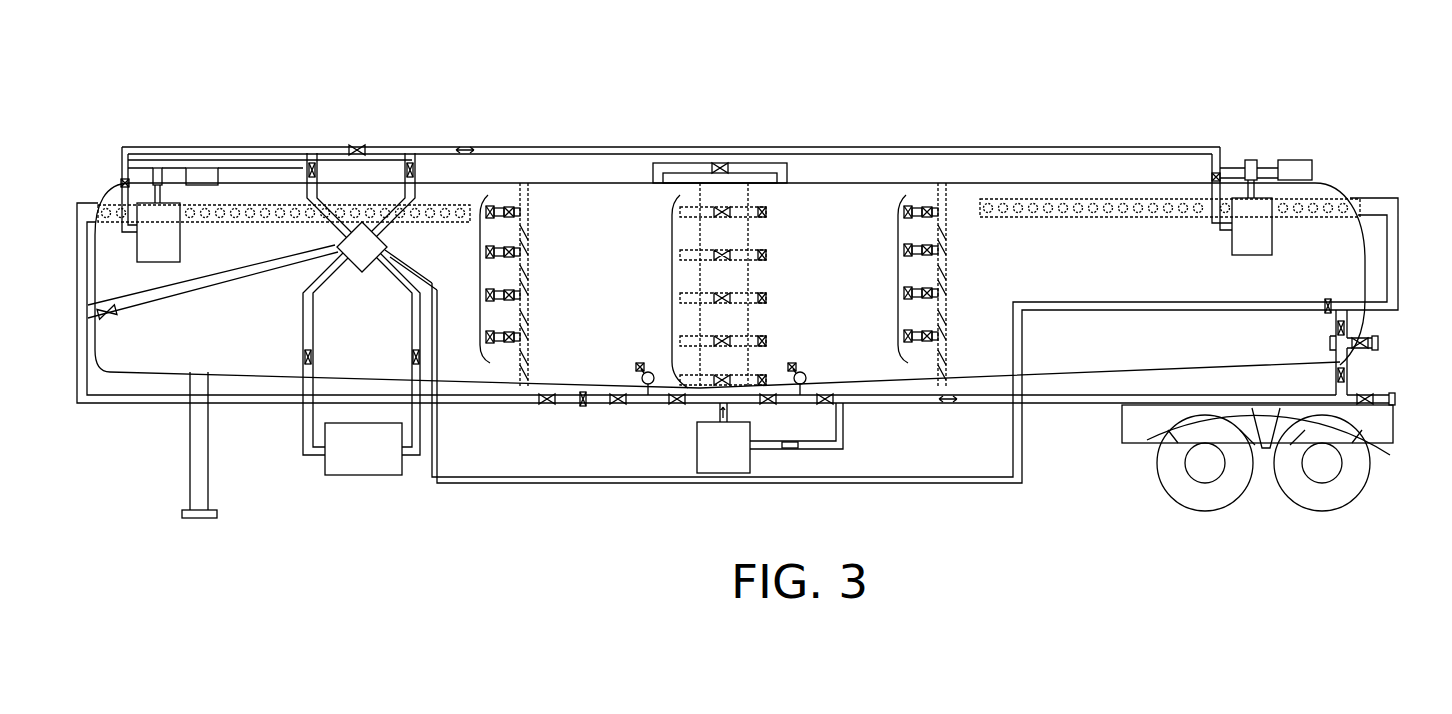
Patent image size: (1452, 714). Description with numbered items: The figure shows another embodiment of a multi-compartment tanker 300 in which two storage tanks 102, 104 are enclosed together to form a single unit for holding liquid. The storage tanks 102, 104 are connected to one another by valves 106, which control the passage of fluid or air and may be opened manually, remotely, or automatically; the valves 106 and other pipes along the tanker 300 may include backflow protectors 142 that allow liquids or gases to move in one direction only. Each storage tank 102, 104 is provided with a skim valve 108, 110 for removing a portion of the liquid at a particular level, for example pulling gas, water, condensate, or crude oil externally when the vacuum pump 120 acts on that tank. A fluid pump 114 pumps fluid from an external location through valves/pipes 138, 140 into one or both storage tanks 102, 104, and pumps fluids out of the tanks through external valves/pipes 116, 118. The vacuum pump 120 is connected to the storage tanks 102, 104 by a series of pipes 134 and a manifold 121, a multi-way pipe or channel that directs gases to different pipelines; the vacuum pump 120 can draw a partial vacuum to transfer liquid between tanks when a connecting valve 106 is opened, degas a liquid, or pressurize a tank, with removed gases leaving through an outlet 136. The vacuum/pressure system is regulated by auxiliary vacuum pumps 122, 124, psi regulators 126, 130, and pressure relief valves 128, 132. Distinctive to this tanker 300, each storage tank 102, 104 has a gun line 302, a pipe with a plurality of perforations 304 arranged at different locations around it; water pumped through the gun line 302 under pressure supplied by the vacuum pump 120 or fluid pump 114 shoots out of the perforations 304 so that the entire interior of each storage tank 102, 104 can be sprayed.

The tanker 300 is at (205, 55).
The storage tank 102 is at (215, 358).
The storage tank 104 is at (1080, 283).
The valve 106 is at (668, 296).
The skim valve 108 is at (479, 275).
The skim valve 110 is at (893, 275).
The fluid pump 114 is at (714, 468).
The external valve/pipe 116 is at (645, 368).
The external valve/pipe 118 is at (802, 371).
The vacuum pump 120 is at (354, 470).
The manifold 121 is at (353, 253).
The auxiliary vacuum pump 122 is at (170, 240).
The auxiliary vacuum pump 124 is at (1264, 232).
The psi regulator 126 is at (157, 167).
The pressure relief valve 128 is at (217, 181).
The psi regulator 130 is at (1251, 160).
The pressure relief valve 132 is at (1299, 174).
The pipe 134 is at (527, 148).
The outlet 136 is at (786, 172).
The valve/pipe 138 is at (1380, 343).
The valve/pipe 140 is at (1398, 397).
The backflow protector 142 is at (617, 405).
The gun line 302 is at (233, 216).
The perforation 304 is at (284, 216).